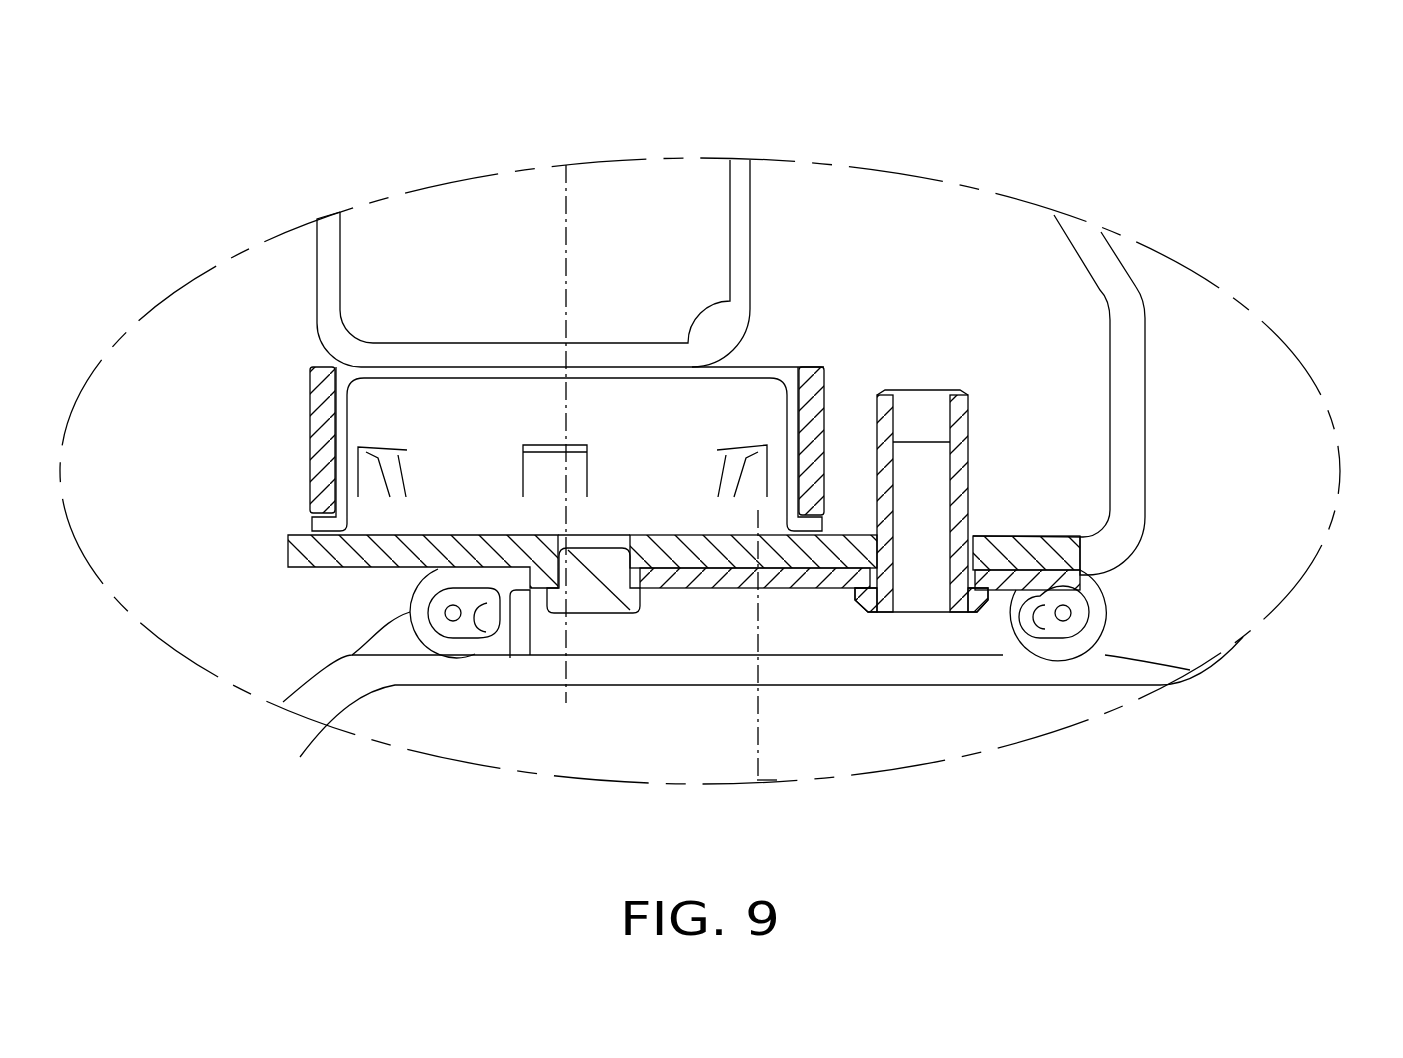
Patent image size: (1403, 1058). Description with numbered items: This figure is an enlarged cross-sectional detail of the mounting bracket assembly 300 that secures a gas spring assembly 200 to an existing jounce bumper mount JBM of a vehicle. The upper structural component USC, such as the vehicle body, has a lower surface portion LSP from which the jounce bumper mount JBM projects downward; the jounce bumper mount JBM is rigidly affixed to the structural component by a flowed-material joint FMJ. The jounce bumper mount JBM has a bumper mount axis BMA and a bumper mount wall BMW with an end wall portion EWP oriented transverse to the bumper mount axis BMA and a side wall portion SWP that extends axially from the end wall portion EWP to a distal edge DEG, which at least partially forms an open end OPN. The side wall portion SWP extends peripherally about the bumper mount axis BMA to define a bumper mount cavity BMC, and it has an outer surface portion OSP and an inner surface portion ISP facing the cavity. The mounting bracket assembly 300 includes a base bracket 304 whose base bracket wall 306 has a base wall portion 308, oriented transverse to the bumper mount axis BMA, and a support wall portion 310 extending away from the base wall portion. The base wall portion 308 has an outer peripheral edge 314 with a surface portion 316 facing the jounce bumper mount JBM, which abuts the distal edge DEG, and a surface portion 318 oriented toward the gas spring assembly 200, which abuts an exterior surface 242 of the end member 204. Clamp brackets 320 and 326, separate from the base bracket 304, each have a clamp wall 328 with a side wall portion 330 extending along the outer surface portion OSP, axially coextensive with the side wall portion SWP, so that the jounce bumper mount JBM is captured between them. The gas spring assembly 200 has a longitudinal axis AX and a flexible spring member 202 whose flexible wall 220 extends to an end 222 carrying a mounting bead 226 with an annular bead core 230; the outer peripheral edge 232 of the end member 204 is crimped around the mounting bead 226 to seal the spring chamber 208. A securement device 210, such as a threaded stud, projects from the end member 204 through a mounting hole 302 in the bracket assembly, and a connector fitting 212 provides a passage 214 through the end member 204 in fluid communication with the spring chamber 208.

The gas spring assembly 200 is at (1200, 636).
The flexible spring member 202 is at (375, 685).
The end member 204 is at (682, 584).
The spring chamber 208 is at (919, 742).
The securement device 210 is at (590, 597).
The connector fitting 212 is at (969, 462).
The passage 214 is at (933, 398).
The flexible wall 220 is at (1115, 667).
The end 222 is at (1023, 697).
The mounting bead 226 is at (1090, 576).
The bead core 230 is at (1072, 612).
The outer peripheral edge 232 is at (300, 757).
The exterior surface 242 is at (742, 556).
The mounting bracket assembly 300 is at (1167, 306).
The mounting hole 302 is at (495, 551).
The base bracket 304 is at (1147, 387).
The base bracket wall 306 is at (1015, 562).
The base wall portion 308 is at (480, 560).
The support wall portion 310 is at (1103, 262).
The outer peripheral edge 314 is at (256, 548).
The surface portion 316 is at (1020, 535).
The surface portion 318 is at (383, 567).
The clamp bracket 320 is at (826, 366).
The clamp bracket 326 is at (311, 363).
The clamp wall 328 is at (312, 392).
The side wall portion 330 is at (323, 423).
The longitudinal axis AX is at (758, 752).
The bumper mount axis BMA is at (572, 212).
The upper structural component USC is at (754, 182).
The flowed-material joint FMJ is at (365, 366).
The lower surface portion LSP is at (460, 363).
The bumper mount cavity BMC is at (500, 422).
The end wall portion EWP is at (660, 377).
The jounce bumper mount JBM is at (756, 365).
The bumper mount wall BMW is at (782, 368).
The side wall portion SWP is at (793, 418).
The outer surface portion OSP is at (343, 453).
The inner surface portion ISP is at (350, 492).
The distal edge DEG is at (317, 527).
The open end OPN is at (357, 562).